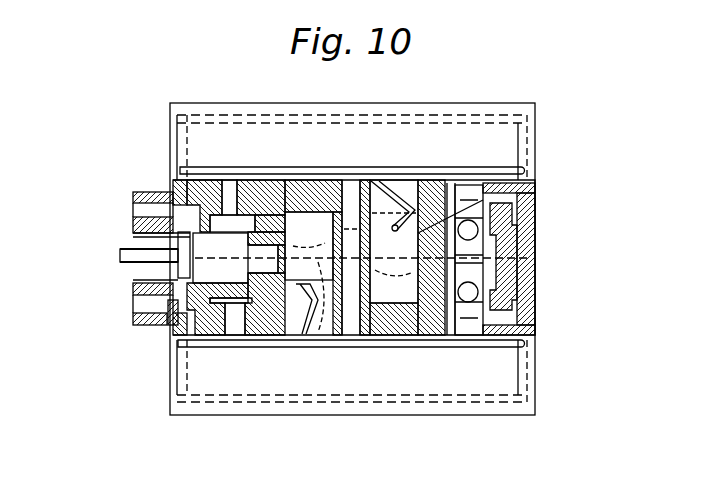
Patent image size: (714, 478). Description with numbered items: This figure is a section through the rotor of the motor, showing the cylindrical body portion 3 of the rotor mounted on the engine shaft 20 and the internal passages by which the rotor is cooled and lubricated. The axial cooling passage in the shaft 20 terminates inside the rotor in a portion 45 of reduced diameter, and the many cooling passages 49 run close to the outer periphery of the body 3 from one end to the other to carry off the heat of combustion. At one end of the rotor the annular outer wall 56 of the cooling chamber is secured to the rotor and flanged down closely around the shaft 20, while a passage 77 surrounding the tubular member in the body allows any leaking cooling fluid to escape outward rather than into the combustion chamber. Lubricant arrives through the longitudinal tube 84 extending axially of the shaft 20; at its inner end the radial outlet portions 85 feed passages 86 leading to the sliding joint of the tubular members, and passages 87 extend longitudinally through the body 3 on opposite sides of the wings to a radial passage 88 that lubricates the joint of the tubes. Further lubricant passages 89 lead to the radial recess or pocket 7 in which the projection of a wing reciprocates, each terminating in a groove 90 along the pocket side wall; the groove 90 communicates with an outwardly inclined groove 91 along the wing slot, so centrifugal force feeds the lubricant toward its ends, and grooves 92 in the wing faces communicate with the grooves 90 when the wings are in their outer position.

The body portion 3 is at (260, 320).
The radial recess or pocket 7 is at (352, 184).
The engine shaft 20 is at (133, 219).
The portion of reduced diameter 45 is at (259, 336).
The passages 49 is at (462, 121).
The annular outer wall 56 is at (137, 324).
The passage 77 is at (238, 215).
The longitudinal tube or pipe 84 is at (122, 265).
The radial outlet portions 85 is at (133, 236).
The passages 86 is at (176, 186).
The passages 87 is at (307, 318).
The radial passage 88 is at (513, 247).
The lubricant passages 89 is at (323, 180).
The groove 90 is at (394, 202).
The groove 91 is at (484, 169).
The grooves 92 is at (414, 333).